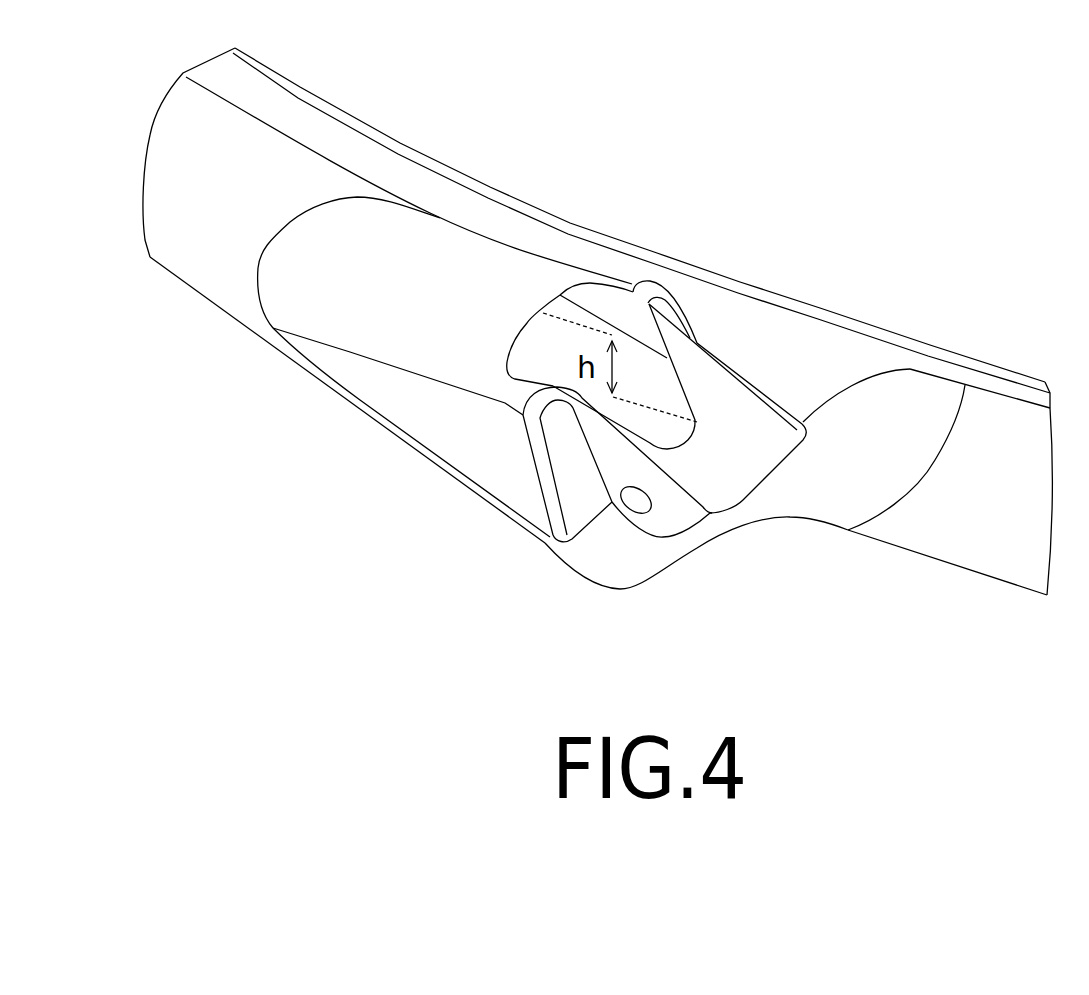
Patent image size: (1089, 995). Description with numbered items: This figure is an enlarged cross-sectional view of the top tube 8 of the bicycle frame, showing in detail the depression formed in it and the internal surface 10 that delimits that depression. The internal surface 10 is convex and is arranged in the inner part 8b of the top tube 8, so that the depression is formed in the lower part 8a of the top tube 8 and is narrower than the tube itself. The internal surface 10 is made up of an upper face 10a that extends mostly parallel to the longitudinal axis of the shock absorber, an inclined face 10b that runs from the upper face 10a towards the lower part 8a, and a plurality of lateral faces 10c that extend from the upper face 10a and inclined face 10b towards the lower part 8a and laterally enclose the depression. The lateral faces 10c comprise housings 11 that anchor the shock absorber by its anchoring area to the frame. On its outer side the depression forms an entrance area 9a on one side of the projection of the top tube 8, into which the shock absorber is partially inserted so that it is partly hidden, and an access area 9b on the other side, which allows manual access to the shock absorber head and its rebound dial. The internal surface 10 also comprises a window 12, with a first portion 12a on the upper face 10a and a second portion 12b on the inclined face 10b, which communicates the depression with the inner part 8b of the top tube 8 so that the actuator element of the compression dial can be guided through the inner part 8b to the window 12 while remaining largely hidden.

The top tube 8 is at (323, 94).
The lower part of the top tube 8a is at (963, 574).
The inner part of the top tube 8b is at (975, 457).
The entrance area 9a is at (525, 531).
The access area 9b is at (698, 550).
The internal surface 10 is at (508, 272).
The upper face 10a is at (435, 270).
The inclined face 10b is at (781, 406).
The lateral faces 10c is at (483, 440).
The housings 11 is at (637, 507).
The window 12 is at (644, 372).
The first portion of the window 12a is at (518, 332).
The second portion of the window 12b is at (687, 440).